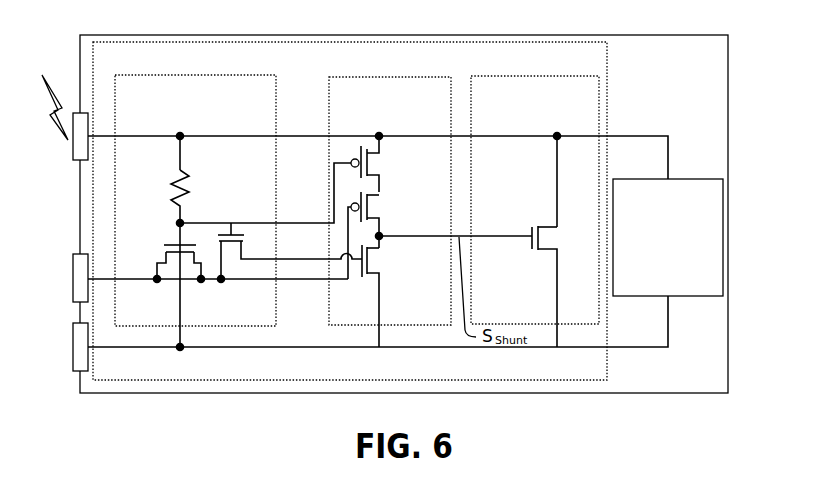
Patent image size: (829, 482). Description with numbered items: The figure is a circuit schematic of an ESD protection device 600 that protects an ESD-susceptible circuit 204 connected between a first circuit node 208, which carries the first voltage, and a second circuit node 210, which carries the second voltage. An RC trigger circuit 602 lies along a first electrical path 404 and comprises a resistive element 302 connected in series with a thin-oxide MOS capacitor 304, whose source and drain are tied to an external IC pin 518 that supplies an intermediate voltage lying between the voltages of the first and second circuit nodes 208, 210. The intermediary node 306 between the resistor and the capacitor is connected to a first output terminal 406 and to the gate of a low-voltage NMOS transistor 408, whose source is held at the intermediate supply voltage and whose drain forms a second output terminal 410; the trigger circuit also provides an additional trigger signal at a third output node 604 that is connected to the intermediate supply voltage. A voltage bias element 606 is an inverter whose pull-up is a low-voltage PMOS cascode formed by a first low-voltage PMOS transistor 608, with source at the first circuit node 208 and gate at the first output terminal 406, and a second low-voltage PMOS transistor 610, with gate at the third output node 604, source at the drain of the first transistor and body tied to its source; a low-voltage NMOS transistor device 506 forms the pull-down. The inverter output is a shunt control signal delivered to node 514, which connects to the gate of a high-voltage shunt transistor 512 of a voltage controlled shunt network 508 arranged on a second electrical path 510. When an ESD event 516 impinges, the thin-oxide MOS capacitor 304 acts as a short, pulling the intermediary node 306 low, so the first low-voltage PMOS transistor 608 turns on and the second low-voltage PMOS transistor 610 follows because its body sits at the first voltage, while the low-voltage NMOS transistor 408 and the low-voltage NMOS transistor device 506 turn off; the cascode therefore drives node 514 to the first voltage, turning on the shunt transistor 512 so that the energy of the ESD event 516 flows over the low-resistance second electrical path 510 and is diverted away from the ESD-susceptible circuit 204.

The ESD event 516 is at (53, 70).
The external IC pin 518 is at (74, 256).
The ESD protection device 600 is at (350, 211).
The RC trigger circuit 602 is at (195, 200).
The voltage bias element 606 is at (390, 201).
The voltage controlled shunt network 508 is at (535, 200).
The ESD-susceptible circuit 204 is at (668, 237).
The first circuit node 208 is at (634, 136).
The second circuit node 210 is at (640, 348).
The first electrical path 404 is at (178, 160).
The resistive element 302 is at (190, 176).
The intermediary node 306 is at (204, 223).
The thin-oxide MOS capacitor 304 is at (168, 240).
The low-voltage NMOS transistor 408 is at (226, 262).
The first output terminal 406 is at (278, 223).
The second output terminal 410 is at (278, 260).
The third output node 604 is at (278, 281).
The first low-voltage PMOS transistor 608 is at (387, 159).
The second low-voltage PMOS transistor 610 is at (387, 206).
The low-voltage NMOS transistor device 506 is at (386, 264).
The second electrical path 510 is at (556, 160).
The node 514 is at (522, 234).
The high-voltage shunt transistor 512 is at (548, 264).